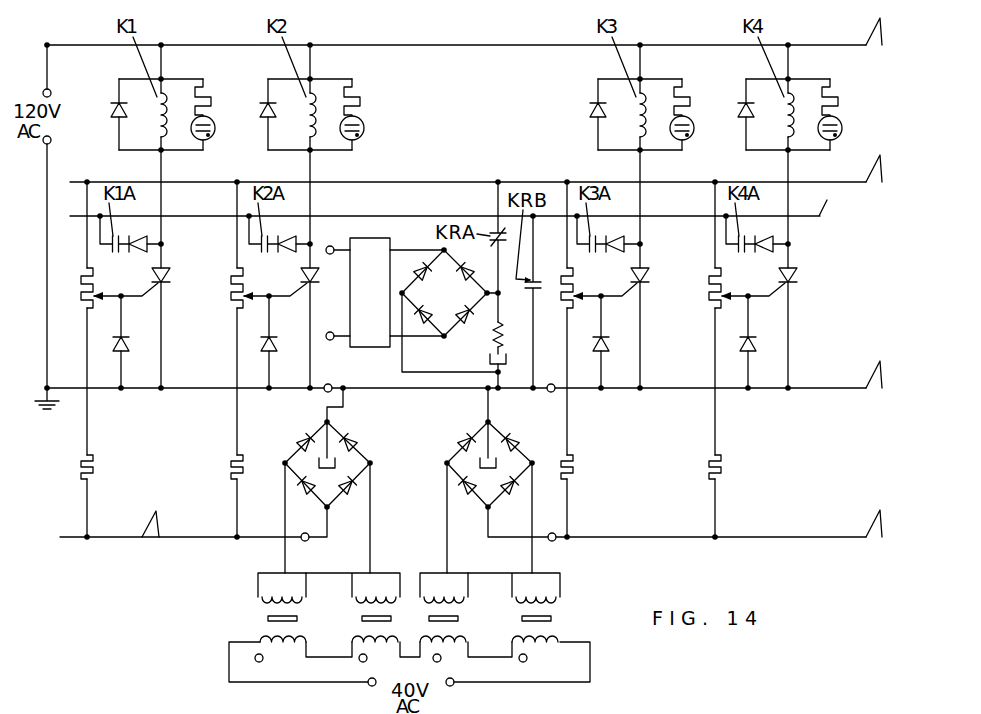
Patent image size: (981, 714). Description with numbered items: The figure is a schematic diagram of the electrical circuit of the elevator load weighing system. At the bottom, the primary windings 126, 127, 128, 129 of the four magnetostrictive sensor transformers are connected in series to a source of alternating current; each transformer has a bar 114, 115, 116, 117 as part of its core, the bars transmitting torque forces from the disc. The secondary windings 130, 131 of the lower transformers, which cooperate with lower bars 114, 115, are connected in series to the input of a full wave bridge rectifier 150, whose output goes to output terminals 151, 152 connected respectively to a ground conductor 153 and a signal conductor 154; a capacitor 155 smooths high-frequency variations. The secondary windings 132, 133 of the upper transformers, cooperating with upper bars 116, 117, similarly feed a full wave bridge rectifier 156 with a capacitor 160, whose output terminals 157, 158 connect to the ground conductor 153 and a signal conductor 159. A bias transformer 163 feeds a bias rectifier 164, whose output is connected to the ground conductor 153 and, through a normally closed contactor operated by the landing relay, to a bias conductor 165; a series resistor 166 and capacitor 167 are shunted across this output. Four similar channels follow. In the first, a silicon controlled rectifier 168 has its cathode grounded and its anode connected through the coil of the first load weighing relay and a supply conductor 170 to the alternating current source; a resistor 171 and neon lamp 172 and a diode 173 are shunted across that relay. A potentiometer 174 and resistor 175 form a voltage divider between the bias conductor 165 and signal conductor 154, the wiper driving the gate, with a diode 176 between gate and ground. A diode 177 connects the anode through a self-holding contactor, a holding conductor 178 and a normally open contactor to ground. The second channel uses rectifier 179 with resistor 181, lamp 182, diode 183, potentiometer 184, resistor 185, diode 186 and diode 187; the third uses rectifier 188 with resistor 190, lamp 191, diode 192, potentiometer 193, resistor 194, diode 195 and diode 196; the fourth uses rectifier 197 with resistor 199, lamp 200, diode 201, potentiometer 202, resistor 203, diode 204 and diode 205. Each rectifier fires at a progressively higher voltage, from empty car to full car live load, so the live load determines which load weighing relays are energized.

The elongate bar 114 is at (268, 619).
The elongate bar 115 is at (362, 619).
The bar 116 is at (458, 619).
The bar 117 is at (551, 619).
The inner primary winding 126 is at (290, 645).
The inner primary winding 127 is at (372, 645).
The inner primary winding 128 is at (447, 645).
The inner primary winding 129 is at (535, 645).
The outer secondary winding 130 is at (282, 588).
The outer secondary winding 131 is at (353, 588).
The outer secondary winding 132 is at (444, 588).
The outer secondary winding 133 is at (514, 588).
The full wave bridge rectifier 150 is at (291, 456).
The output terminal 151 is at (323, 392).
The output terminal 152 is at (310, 524).
The ground conductor 153 is at (464, 387).
The signal conductor 154 is at (180, 536).
The capacitor 155 is at (338, 466).
The full wave bridge rectifier 156 is at (558, 448).
The output terminal 157 is at (560, 399).
The output terminal 158 is at (556, 524).
The signal conductor 159 is at (719, 536).
The capacitor 160 is at (480, 466).
The bias transformer 163 is at (368, 348).
The bias rectifier 164 is at (458, 301).
The bias conductor 165 is at (476, 179).
The resistor 166 is at (500, 322).
The capacitor 167 is at (507, 358).
The first silicon controlled rectifier 168 is at (170, 273).
The supply conductor 170 is at (464, 43).
The resistor 171 is at (209, 98).
The neon lamp 172 is at (211, 133).
The diode 173 is at (116, 118).
The first potentiometer 174 is at (81, 294).
The first resistor 175 is at (84, 471).
The diode 176 is at (129, 350).
The diode 177 is at (144, 254).
The holding conductor 178 is at (460, 223).
The second silicon controlled rectifier 179 is at (319, 273).
The resistor 181 is at (358, 98).
The neon lamp 182 is at (360, 133).
The diode 183 is at (264, 109).
The potentiometer 184 is at (231, 294).
The resistor 185 is at (234, 471).
The diode 186 is at (277, 350).
The diode 187 is at (292, 254).
The third silicon controlled rectifier 188 is at (649, 273).
The resistor 190 is at (688, 98).
The neon lamp 191 is at (690, 133).
The diode 192 is at (595, 118).
The potentiometer 193 is at (561, 294).
The resistor 194 is at (574, 471).
The diode 195 is at (609, 350).
The diode 196 is at (622, 254).
The fourth silicon controlled rectifier 197 is at (797, 273).
The resistor 199 is at (836, 98).
The neon lamp 200 is at (838, 133).
The diode 201 is at (742, 109).
The potentiometer 202 is at (709, 294).
The resistor 203 is at (722, 471).
The diode 204 is at (756, 350).
The diode 205 is at (770, 254).